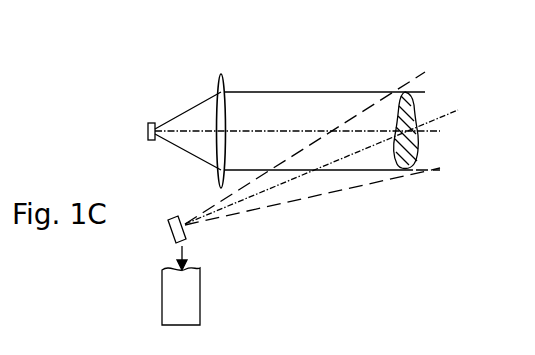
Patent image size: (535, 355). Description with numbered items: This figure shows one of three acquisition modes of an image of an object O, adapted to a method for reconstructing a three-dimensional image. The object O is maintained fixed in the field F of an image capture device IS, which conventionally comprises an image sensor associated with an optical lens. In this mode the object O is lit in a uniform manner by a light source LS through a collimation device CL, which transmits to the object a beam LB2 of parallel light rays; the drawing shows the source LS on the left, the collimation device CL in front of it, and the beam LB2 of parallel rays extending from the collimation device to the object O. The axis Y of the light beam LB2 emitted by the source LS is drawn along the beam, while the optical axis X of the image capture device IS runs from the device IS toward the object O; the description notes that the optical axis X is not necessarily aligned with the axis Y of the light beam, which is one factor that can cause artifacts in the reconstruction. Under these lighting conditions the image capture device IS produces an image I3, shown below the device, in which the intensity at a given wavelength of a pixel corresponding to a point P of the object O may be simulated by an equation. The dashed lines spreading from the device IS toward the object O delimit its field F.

The light source LS is at (152, 122).
The collimation device CL is at (223, 74).
The beam of parallel light rays LB2 is at (305, 104).
The axis of light beam Y is at (245, 131).
The optical axis of image capture device X is at (452, 109).
The point of object P is at (397, 110).
The object O is at (420, 152).
The field of image capture device F is at (316, 191).
The image capture device IS is at (173, 218).
The image I3 is at (181, 296).